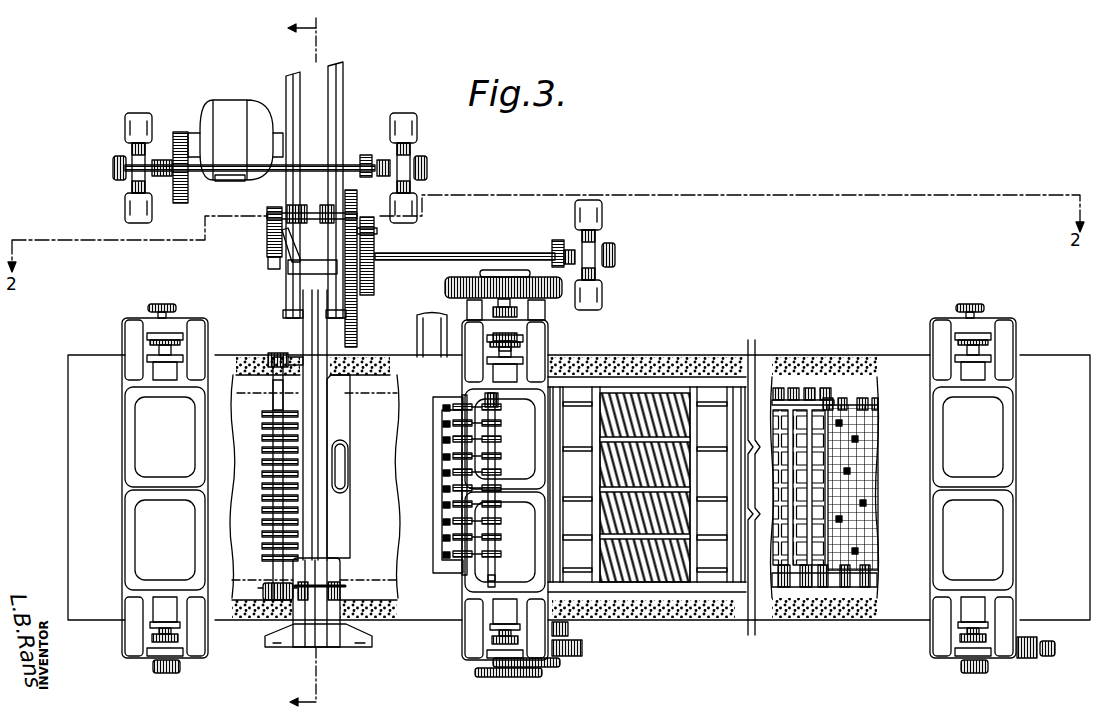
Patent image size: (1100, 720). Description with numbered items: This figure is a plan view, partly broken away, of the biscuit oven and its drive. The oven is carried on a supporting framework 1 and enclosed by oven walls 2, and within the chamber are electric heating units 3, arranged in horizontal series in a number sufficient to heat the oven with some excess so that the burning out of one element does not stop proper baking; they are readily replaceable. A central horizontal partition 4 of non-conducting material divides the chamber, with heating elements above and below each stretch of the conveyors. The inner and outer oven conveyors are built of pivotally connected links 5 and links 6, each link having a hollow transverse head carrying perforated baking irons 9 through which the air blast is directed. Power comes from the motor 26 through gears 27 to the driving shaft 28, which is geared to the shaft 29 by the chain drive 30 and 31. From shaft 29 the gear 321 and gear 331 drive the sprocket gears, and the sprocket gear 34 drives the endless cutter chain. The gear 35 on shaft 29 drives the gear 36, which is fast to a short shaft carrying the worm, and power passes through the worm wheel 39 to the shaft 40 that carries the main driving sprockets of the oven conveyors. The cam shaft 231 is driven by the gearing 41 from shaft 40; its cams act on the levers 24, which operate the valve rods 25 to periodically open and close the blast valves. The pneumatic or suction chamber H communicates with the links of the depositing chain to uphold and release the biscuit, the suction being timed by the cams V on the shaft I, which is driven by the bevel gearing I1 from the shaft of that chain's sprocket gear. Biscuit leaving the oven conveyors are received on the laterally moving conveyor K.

The supporting framework 1 is at (125, 646).
The oven walls 2 is at (579, 487).
The electric heating units 3 is at (690, 415).
The central horizontal partition 4 is at (290, 366).
The links of inner oven conveyor 5 is at (813, 392).
The links of outer oven conveyor 6 is at (862, 403).
The baking irons 9 is at (868, 522).
The shaft of the cams 231 is at (495, 572).
The levers 24 is at (455, 440).
The valve rods 25 is at (443, 421).
The motor 26 is at (235, 122).
The gears 27 is at (180, 204).
The driving shaft 28 is at (263, 174).
The shaft 29 is at (480, 254).
The chain drive 30 is at (364, 152).
The chain drive 31 is at (375, 248).
The gear 321 is at (378, 233).
The gear 331 is at (358, 328).
The sprocket gear 34 is at (290, 262).
The gear 35 is at (556, 240).
The gear 36 is at (560, 300).
The worm wheel 39 is at (455, 284).
The shaft 40 is at (520, 342).
The gearing 41 is at (527, 677).
The pneumatic or suction chamber H is at (343, 530).
The shaft I is at (273, 405).
The bevel gearing I1 is at (268, 583).
The laterally moving conveyor K is at (432, 335).
The cams V is at (262, 519).